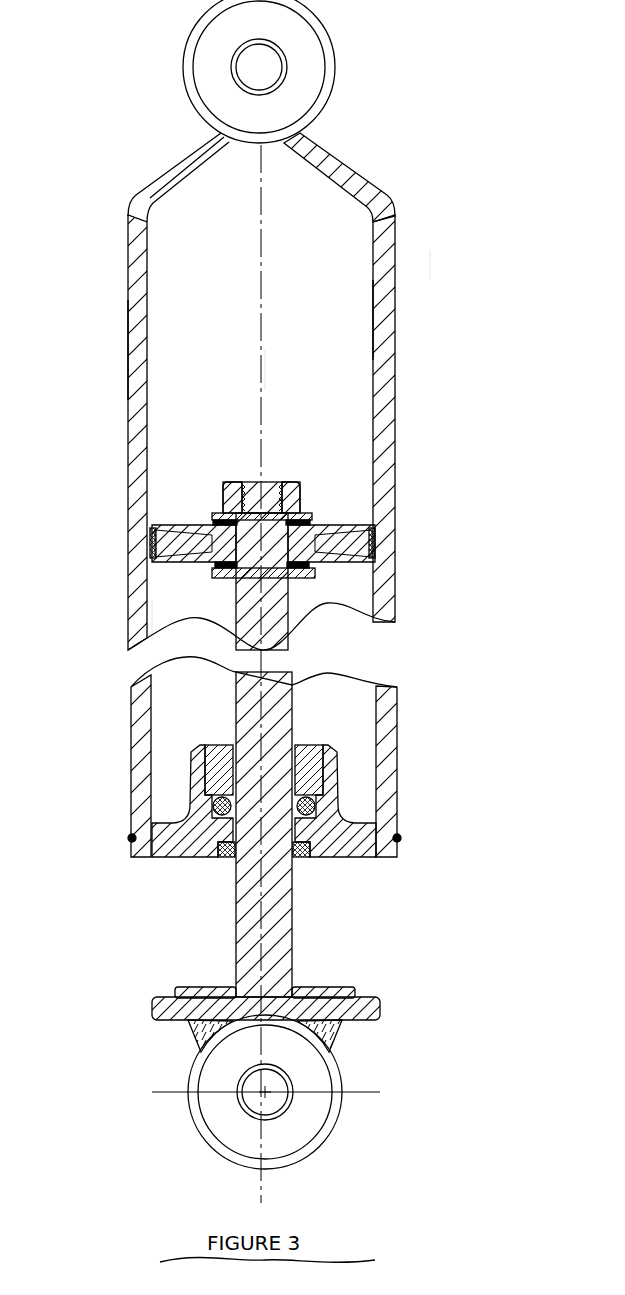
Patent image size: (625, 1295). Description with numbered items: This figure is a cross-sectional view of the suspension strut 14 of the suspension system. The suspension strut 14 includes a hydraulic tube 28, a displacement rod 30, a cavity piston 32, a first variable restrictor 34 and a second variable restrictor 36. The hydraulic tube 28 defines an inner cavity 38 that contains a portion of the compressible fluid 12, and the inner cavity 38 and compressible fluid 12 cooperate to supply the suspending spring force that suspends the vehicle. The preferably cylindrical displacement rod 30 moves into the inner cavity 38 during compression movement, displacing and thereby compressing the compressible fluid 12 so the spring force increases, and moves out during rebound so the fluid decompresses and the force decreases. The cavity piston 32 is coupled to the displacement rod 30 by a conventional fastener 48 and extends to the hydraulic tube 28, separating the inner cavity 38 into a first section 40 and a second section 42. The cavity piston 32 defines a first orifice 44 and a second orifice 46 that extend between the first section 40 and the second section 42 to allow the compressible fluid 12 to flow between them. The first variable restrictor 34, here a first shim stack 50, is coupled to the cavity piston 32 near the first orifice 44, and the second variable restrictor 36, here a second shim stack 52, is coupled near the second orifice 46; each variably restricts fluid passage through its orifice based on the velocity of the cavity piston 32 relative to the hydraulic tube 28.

The compressible fluid 12 is at (333, 381).
The suspension strut 14 is at (428, 268).
The hydraulic tube 28 is at (397, 405).
The displacement rod 30 is at (283, 608).
The cavity piston 32 is at (362, 580).
The first variable restrictor 34 is at (212, 517).
The second variable restrictor 36 is at (212, 566).
The inner cavity 38 is at (361, 318).
The first section 40 is at (160, 385).
The second section 42 is at (173, 605).
The first orifice 44 is at (373, 524).
The second orifice 46 is at (147, 553).
The fastener 48 is at (283, 484).
The first shim stack 50 is at (210, 521).
The second shim stack 52 is at (210, 575).